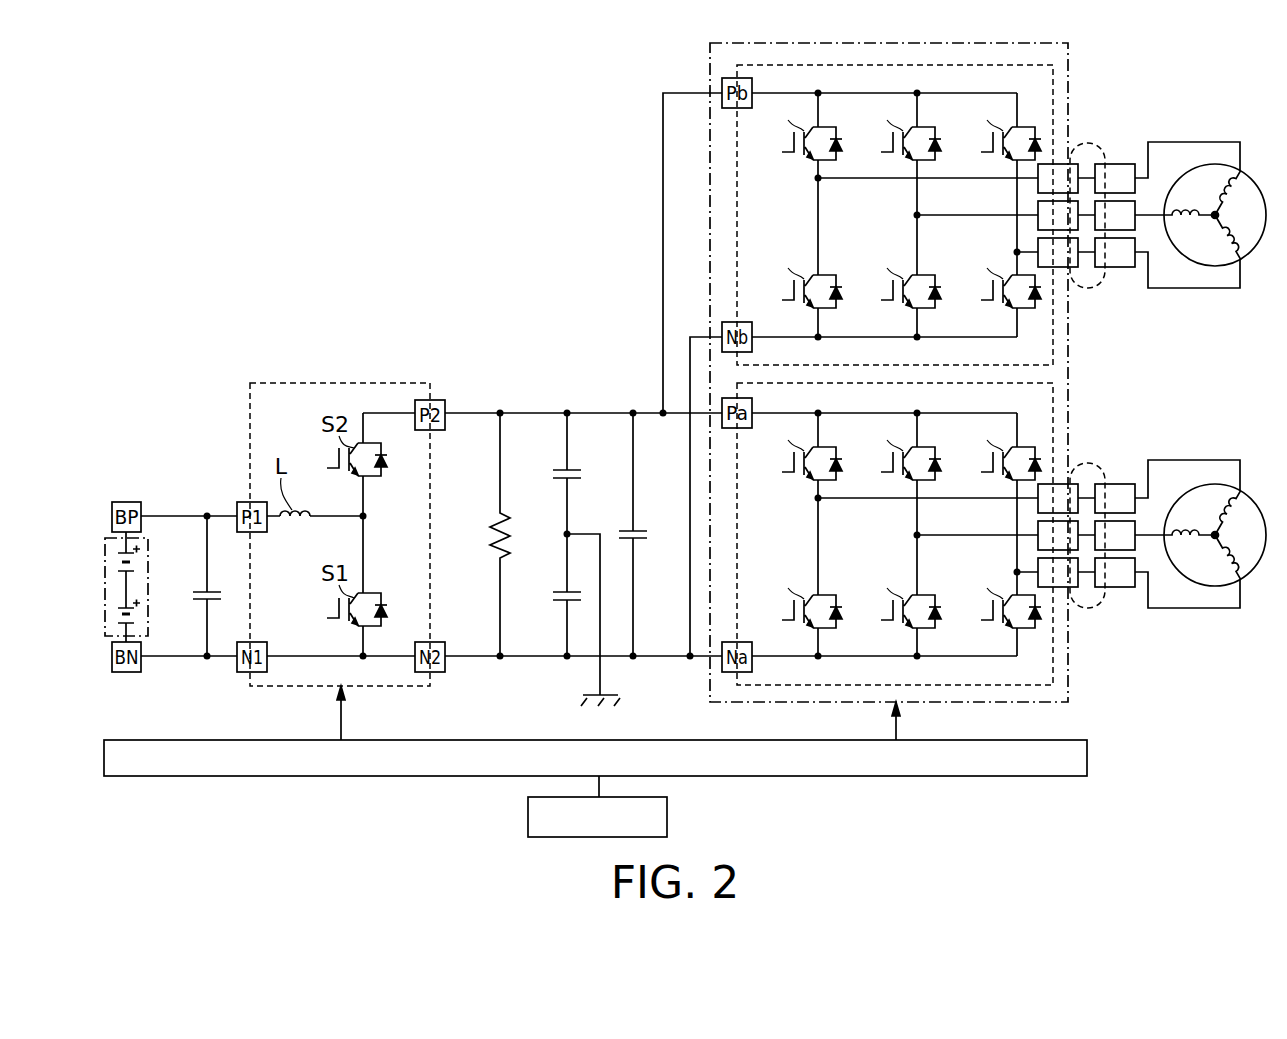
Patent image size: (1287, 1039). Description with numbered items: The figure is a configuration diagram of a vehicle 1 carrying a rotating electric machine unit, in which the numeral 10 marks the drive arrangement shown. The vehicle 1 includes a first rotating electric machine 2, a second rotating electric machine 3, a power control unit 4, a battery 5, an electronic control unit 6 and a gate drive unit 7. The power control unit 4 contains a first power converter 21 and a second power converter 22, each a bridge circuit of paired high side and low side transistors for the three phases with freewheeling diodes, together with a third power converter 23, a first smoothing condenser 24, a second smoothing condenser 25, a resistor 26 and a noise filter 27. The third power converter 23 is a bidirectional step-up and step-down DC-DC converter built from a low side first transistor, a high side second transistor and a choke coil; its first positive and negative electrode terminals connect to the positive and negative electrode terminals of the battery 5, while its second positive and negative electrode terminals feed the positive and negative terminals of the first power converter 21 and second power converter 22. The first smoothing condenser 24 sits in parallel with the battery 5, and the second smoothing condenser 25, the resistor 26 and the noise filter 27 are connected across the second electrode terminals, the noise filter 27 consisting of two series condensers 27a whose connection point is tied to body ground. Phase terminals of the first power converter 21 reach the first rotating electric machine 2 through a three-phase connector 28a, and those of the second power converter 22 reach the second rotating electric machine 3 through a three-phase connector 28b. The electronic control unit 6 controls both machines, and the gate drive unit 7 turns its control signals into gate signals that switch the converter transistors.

The vehicle 1 is at (376, 134).
The first rotating electric machine 2 is at (1254, 491).
The second rotating electric machine 3 is at (1254, 171).
The power control unit 4 is at (611, 205).
The battery 5 is at (147, 536).
The electronic control unit 6 is at (667, 810).
The gate drive unit 7 is at (1087, 756).
The inverter device 10 is at (1185, 92).
The first power converter 21 is at (1053, 385).
The second power converter 22 is at (1053, 65).
The third power converter 23 is at (285, 383).
The first smoothing condenser 24 is at (200, 591).
The second smoothing condenser 25 is at (642, 530).
The resistor 26 is at (492, 516).
The noise filter 27 is at (560, 592).
The condenser 27a is at (560, 470).
The three-phase connector 28a is at (1090, 463).
The three-phase connector 28b is at (1090, 143).